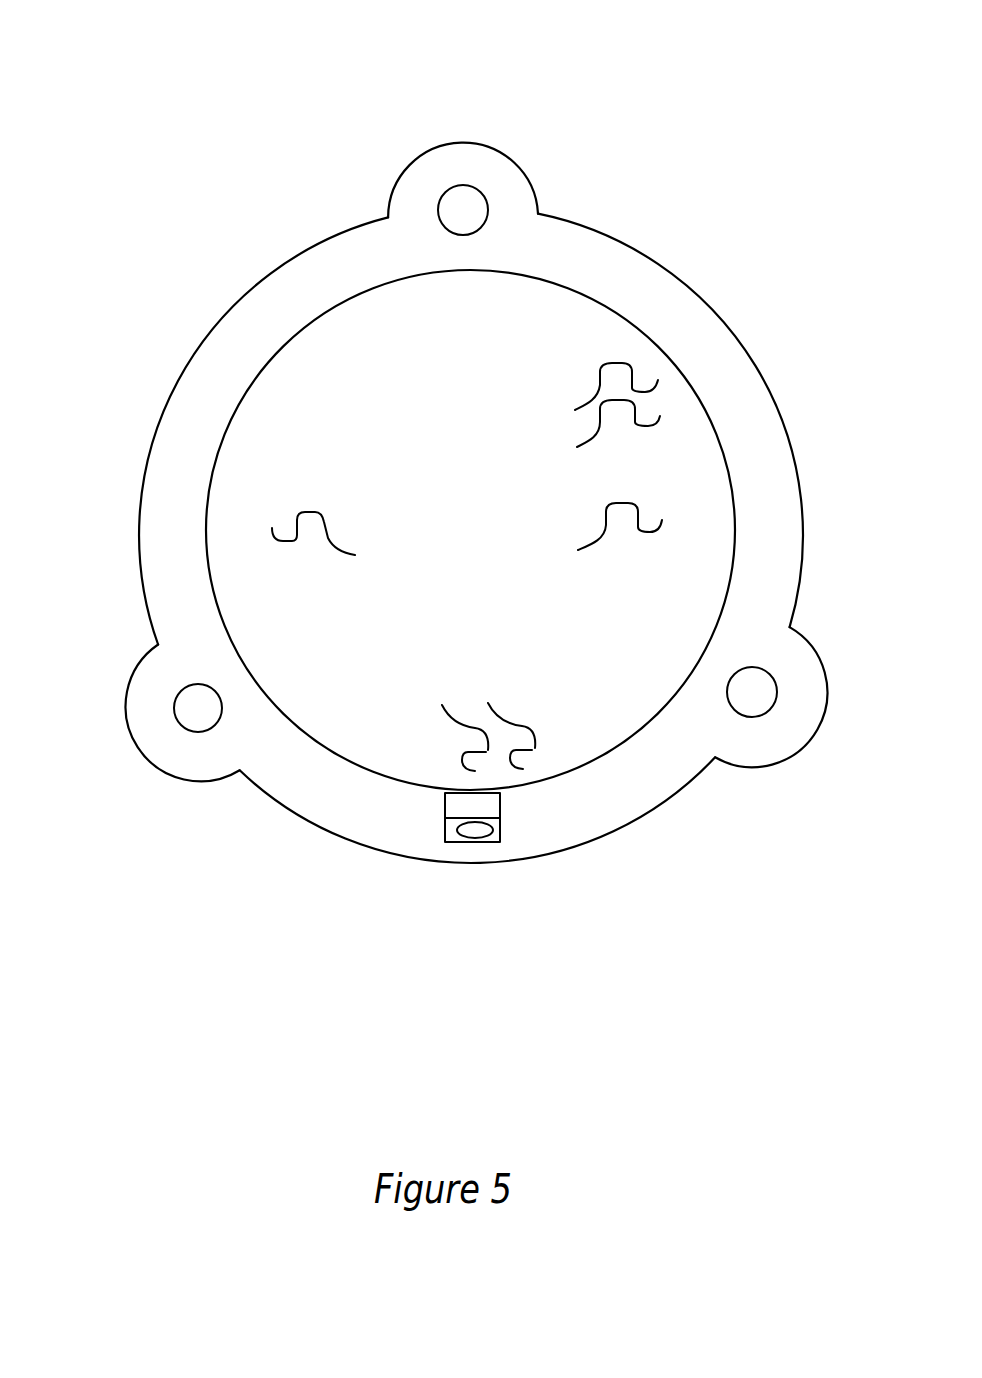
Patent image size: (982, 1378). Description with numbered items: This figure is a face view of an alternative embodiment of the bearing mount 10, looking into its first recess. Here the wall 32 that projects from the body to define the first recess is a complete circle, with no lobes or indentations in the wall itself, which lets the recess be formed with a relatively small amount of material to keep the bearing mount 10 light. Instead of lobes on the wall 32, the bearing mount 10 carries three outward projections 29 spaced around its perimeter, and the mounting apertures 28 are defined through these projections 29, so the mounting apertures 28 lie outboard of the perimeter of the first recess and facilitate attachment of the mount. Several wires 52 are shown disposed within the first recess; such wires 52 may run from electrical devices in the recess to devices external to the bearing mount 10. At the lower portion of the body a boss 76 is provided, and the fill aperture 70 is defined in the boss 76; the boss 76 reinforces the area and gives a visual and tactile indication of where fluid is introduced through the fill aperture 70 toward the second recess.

The bearing mount 10 is at (705, 173).
The mounting apertures 28 is at (463, 205).
The projections 29 is at (415, 139).
The wall 32 is at (292, 320).
The wires 52 is at (287, 510).
The fill aperture 70 is at (473, 830).
The boss 76 is at (458, 803).